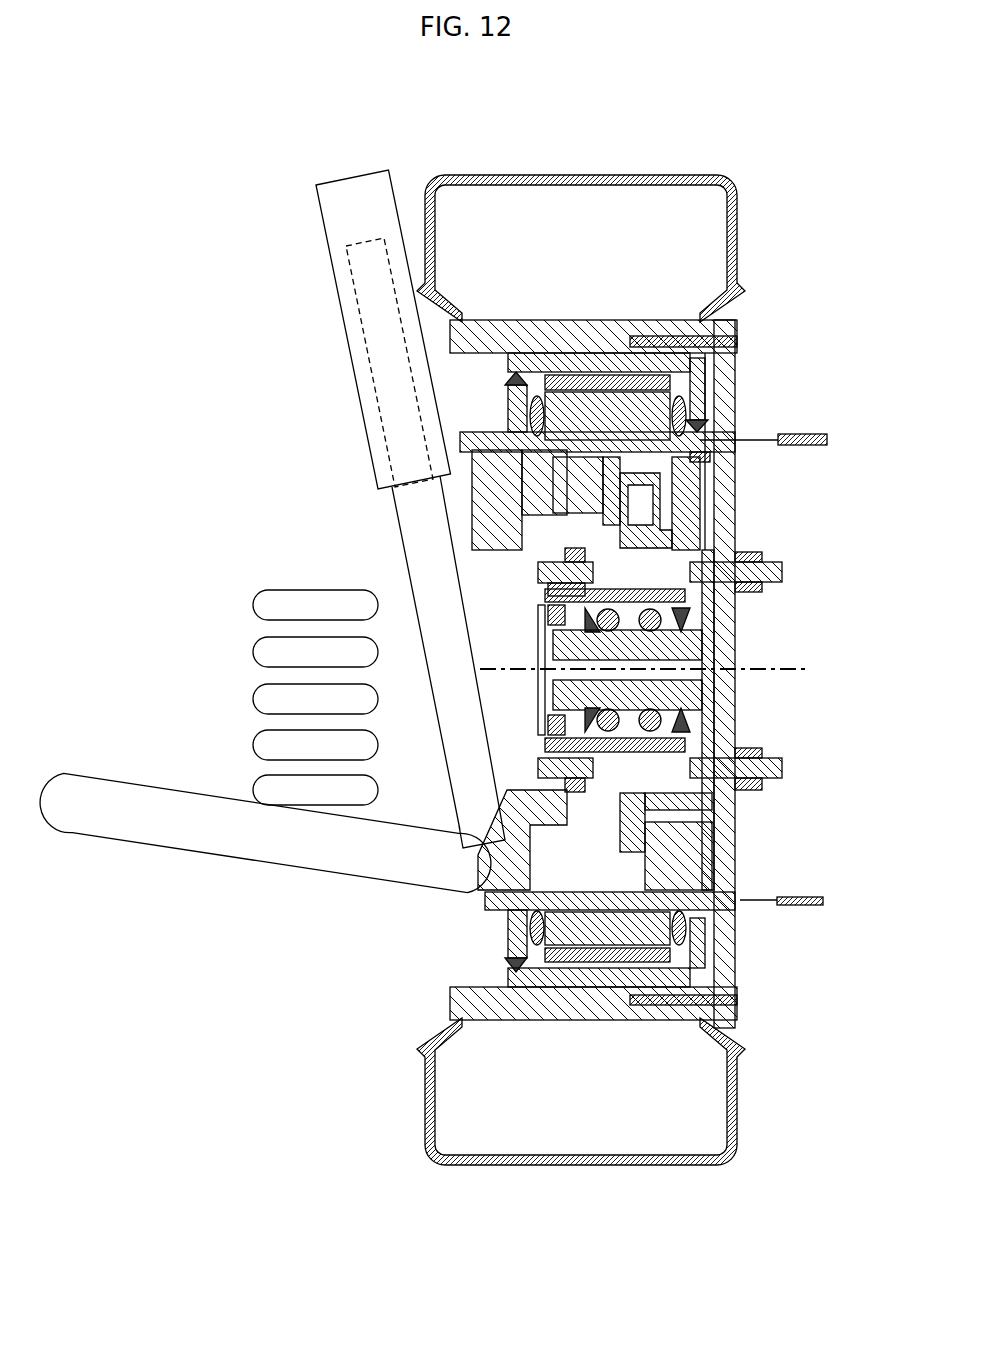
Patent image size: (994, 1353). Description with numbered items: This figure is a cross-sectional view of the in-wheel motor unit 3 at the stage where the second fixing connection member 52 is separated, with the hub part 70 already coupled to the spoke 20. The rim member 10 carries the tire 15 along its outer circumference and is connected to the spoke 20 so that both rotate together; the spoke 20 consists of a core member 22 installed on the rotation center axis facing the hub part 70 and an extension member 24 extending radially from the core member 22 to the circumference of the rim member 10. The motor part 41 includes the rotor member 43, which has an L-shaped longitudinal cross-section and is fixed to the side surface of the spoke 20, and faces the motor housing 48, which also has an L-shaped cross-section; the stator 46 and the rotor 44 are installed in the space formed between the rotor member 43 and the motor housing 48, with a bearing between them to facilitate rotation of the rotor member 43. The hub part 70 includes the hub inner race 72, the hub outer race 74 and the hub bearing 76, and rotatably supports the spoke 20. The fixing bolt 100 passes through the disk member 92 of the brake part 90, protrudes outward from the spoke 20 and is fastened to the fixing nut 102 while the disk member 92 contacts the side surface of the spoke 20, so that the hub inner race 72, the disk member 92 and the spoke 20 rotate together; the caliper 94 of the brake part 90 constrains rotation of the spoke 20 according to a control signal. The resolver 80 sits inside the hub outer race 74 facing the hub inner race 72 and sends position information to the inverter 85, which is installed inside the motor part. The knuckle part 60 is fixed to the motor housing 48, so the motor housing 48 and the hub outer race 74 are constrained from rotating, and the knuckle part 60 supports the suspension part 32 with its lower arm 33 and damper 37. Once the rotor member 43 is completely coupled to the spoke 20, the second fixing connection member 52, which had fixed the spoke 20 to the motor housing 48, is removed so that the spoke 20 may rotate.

The in-wheel motor unit 3 is at (165, 248).
The rim member 10 is at (588, 330).
The tire 15 is at (585, 175).
The spoke 20 is at (842, 542).
The core member 22 is at (725, 620).
The extension member 24 is at (745, 575).
The suspension part 32 is at (185, 882).
The lower arm 33 is at (120, 823).
The damper 37 is at (322, 380).
The motor part 41 is at (495, 958).
The rotor member 43 is at (598, 998).
The rotor 44 is at (735, 1010).
The stator 46 is at (697, 945).
The motor housing 48 is at (655, 425).
The second fixing connection member 52 is at (827, 440).
The knuckle part 60 is at (472, 905).
The hub part 70 is at (835, 790).
The hub inner race 72 is at (648, 750).
The hub outer race 74 is at (690, 858).
The hub bearing 76 is at (665, 770).
The resolver 80 is at (545, 740).
The inverter 85 is at (784, 922).
The brake part 90 is at (812, 452).
The disk member 92 is at (628, 487).
The caliper 94 is at (640, 470).
The fixing bolt 100 is at (782, 768).
The fixing nut 102 is at (760, 748).